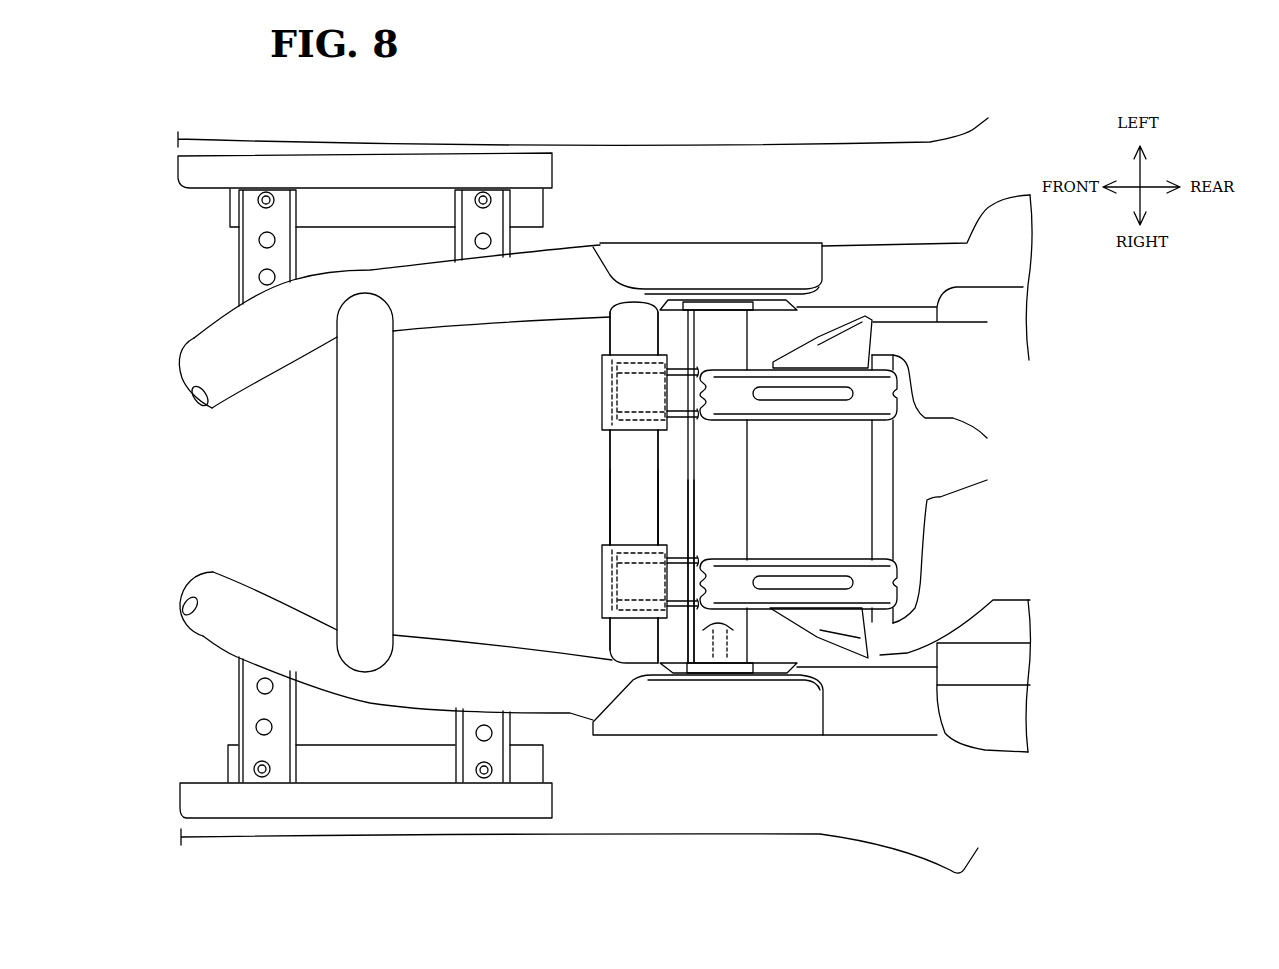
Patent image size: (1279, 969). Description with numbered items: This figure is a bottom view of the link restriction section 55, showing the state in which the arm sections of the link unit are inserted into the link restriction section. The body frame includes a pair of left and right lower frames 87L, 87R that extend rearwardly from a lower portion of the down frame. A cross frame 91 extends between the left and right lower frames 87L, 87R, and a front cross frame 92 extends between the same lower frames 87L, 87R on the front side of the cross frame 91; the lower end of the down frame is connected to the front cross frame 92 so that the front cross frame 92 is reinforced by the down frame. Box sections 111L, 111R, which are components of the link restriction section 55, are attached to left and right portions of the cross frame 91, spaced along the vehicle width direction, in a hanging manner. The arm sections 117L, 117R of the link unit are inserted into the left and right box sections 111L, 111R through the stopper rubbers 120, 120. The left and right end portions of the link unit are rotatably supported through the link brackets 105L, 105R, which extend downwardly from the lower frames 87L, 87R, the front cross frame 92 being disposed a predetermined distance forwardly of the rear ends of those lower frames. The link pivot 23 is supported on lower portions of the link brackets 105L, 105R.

The left lower frame 87L is at (208, 362).
The right lower frame 87R is at (212, 625).
The front cross frame 92 is at (350, 487).
The cross frame 91 is at (628, 485).
The left box section 111L is at (607, 352).
The right box section 111R is at (607, 618).
The stopper rubber 120 is at (633, 355).
The link restriction section 55 is at (642, 322).
The left arm section 117L is at (677, 393).
The right arm section 117R is at (680, 587).
The left link bracket 105L is at (809, 237).
The right link bracket 105R is at (820, 760).
The link pivot 23 is at (730, 650).